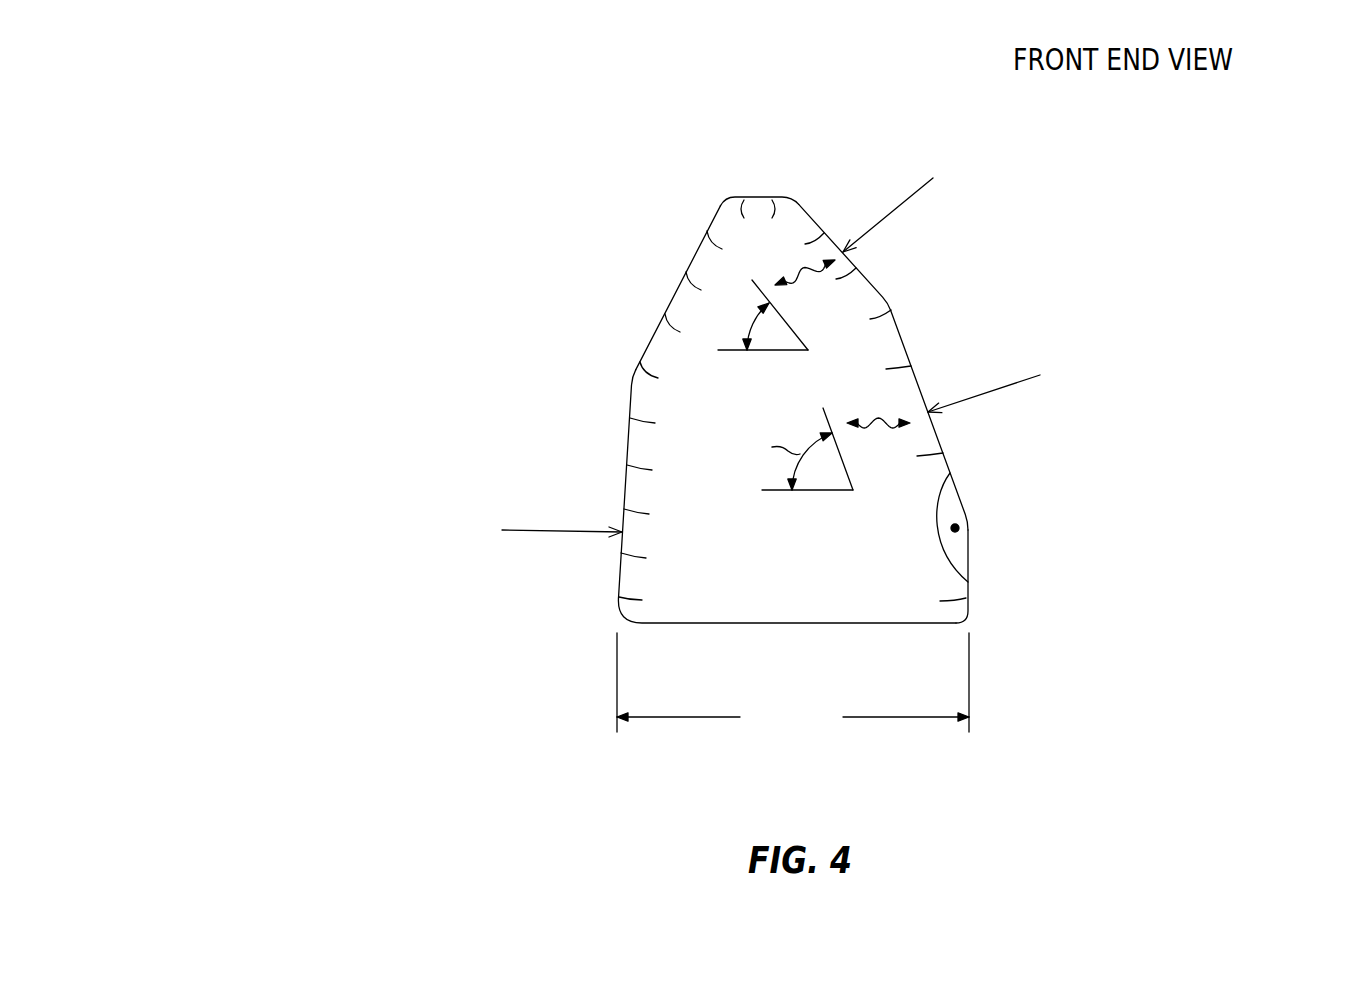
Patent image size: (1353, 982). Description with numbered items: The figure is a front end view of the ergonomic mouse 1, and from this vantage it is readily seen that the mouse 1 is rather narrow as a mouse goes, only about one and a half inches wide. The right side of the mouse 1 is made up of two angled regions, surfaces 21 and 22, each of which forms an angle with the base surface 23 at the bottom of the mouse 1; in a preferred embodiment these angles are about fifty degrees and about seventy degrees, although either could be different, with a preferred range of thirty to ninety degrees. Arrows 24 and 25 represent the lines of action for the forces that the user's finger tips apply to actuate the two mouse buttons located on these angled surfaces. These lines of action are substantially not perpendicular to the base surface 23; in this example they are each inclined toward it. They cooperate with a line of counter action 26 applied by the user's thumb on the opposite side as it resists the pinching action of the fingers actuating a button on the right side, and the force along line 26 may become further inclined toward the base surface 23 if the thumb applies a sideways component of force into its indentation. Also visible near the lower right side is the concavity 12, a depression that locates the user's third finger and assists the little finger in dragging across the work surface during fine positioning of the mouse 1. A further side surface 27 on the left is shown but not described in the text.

The mouse 1 is at (647, 122).
The concavity 12 is at (952, 530).
The surface 21 is at (808, 212).
The surface 22 is at (957, 493).
The base surface 23 is at (783, 623).
The arrow 24 is at (917, 191).
The arrow 25 is at (990, 392).
The line of counter action 26 is at (548, 532).
The upper left angled surface 27 is at (632, 393).